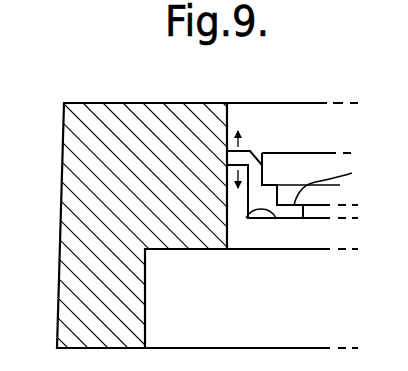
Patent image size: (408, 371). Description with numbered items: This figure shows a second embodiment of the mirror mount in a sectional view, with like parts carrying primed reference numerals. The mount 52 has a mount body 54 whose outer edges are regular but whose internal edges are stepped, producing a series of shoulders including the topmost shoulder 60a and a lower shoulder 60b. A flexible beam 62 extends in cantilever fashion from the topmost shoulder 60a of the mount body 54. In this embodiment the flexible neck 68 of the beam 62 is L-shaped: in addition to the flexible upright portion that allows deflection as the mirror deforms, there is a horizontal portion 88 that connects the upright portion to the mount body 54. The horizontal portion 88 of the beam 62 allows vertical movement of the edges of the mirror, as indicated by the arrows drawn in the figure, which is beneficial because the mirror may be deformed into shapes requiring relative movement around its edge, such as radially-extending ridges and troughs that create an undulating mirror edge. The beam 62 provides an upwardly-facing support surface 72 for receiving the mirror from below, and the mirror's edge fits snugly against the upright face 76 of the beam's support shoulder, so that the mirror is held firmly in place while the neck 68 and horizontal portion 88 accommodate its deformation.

The mount 52 is at (68, 171).
The mount body 54 is at (133, 121).
The horizontal portion 88 is at (254, 150).
The flexible beam 62 is at (276, 166).
The support surface 72 is at (386, 162).
The upright face 76 is at (297, 225).
The topmost shoulder 60a is at (226, 252).
The flexible neck 68 is at (242, 174).
The shoulder 60b is at (208, 314).